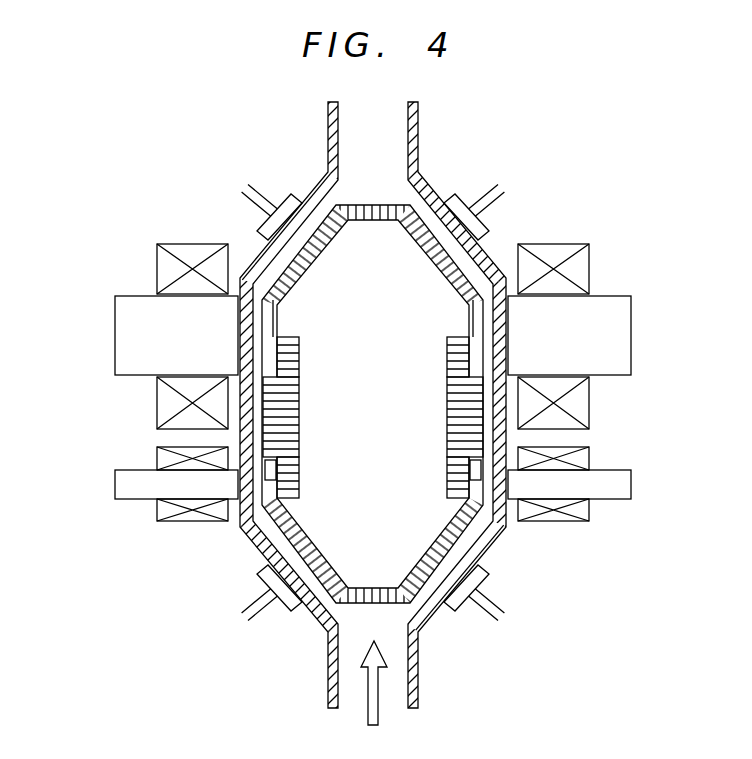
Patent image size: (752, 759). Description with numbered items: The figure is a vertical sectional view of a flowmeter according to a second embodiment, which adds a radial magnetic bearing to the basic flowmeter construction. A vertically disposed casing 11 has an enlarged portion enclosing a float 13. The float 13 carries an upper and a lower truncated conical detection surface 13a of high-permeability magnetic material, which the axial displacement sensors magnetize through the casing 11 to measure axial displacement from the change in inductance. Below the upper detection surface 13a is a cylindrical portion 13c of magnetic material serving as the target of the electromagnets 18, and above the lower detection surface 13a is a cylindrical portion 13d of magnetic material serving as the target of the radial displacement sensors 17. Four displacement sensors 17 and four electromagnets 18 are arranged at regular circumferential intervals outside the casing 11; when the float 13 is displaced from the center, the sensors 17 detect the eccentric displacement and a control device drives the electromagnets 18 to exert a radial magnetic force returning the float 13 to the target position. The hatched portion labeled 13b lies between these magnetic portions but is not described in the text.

The casing 11 is at (328, 121).
The float 13 is at (357, 333).
The detection surface 13a is at (453, 247).
The electrode 13b is at (448, 417).
The cylindrical portion 13c is at (473, 323).
The cylindrical portion 13d is at (478, 476).
The radial displacement sensors 17 is at (115, 491).
The electromagnets 18 is at (115, 338).